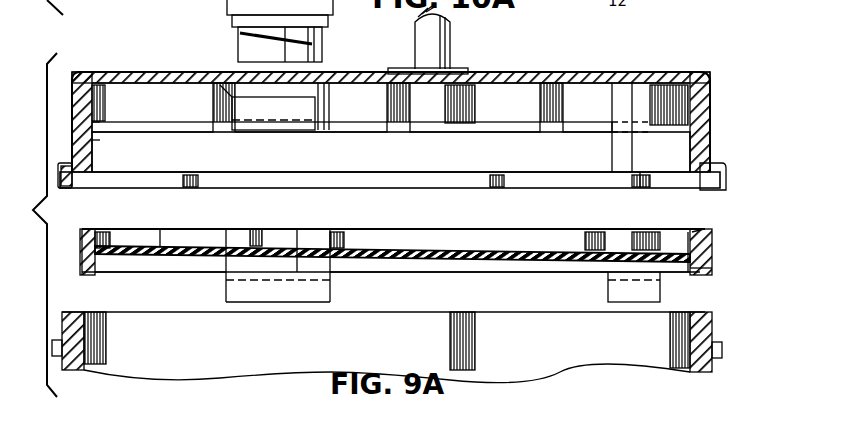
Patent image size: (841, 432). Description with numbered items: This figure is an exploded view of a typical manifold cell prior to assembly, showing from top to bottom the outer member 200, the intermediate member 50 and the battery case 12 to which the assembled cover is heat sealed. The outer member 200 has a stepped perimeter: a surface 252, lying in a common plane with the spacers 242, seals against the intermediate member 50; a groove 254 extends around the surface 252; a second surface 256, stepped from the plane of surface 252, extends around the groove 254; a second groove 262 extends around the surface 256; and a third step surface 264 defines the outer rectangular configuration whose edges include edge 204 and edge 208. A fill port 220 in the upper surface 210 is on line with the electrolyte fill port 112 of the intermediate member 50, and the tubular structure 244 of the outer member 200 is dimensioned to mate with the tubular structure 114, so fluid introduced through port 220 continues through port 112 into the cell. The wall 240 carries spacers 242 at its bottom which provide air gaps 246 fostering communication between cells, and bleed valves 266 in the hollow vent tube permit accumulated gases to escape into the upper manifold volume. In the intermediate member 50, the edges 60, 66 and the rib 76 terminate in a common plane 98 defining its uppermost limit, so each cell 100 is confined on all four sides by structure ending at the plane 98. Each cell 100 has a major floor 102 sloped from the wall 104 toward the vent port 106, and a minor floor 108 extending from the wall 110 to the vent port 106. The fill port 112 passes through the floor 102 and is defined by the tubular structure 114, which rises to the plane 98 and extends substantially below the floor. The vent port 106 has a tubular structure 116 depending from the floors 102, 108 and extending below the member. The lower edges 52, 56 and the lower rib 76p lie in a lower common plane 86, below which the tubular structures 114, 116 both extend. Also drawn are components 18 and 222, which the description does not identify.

The battery case 12 is at (560, 373).
The post 18 is at (442, 33).
The intermediate member 50 is at (405, 258).
The edge 52 is at (82, 272).
The edge 56 is at (702, 268).
The edge 60 is at (85, 230).
The edge 66 is at (710, 251).
The rib 76 is at (430, 230).
The rib 76p is at (428, 273).
The common plane 86 is at (92, 272).
The common plane 98 is at (700, 240).
The cell 100 is at (495, 245).
The major floor 102 is at (162, 240).
The wall 104 is at (110, 234).
The vent port 106 is at (600, 248).
The minor floor 108 is at (683, 246).
The wall 110 is at (690, 250).
The electrolyte fill port 112 is at (297, 240).
The tubular structure 114 is at (343, 233).
The tubular structure 116 is at (660, 296).
The outer member 200 is at (409, 109).
The edge 204 is at (722, 178).
The edge 208 is at (58, 172).
The upper surface 210 is at (588, 78).
The fill port 220 is at (330, 83).
The fitting 222 is at (238, 24).
The wall 240 is at (391, 110).
The spacers 242 is at (218, 131).
The tubular structure 244 is at (328, 108).
The air gaps 246 is at (192, 131).
The surface 252 is at (88, 128).
The groove 254 is at (88, 137).
The second surface 256 is at (80, 176).
The second groove 262 is at (70, 186).
The third step surface 264 is at (648, 142).
The bleed valves 266 is at (640, 178).